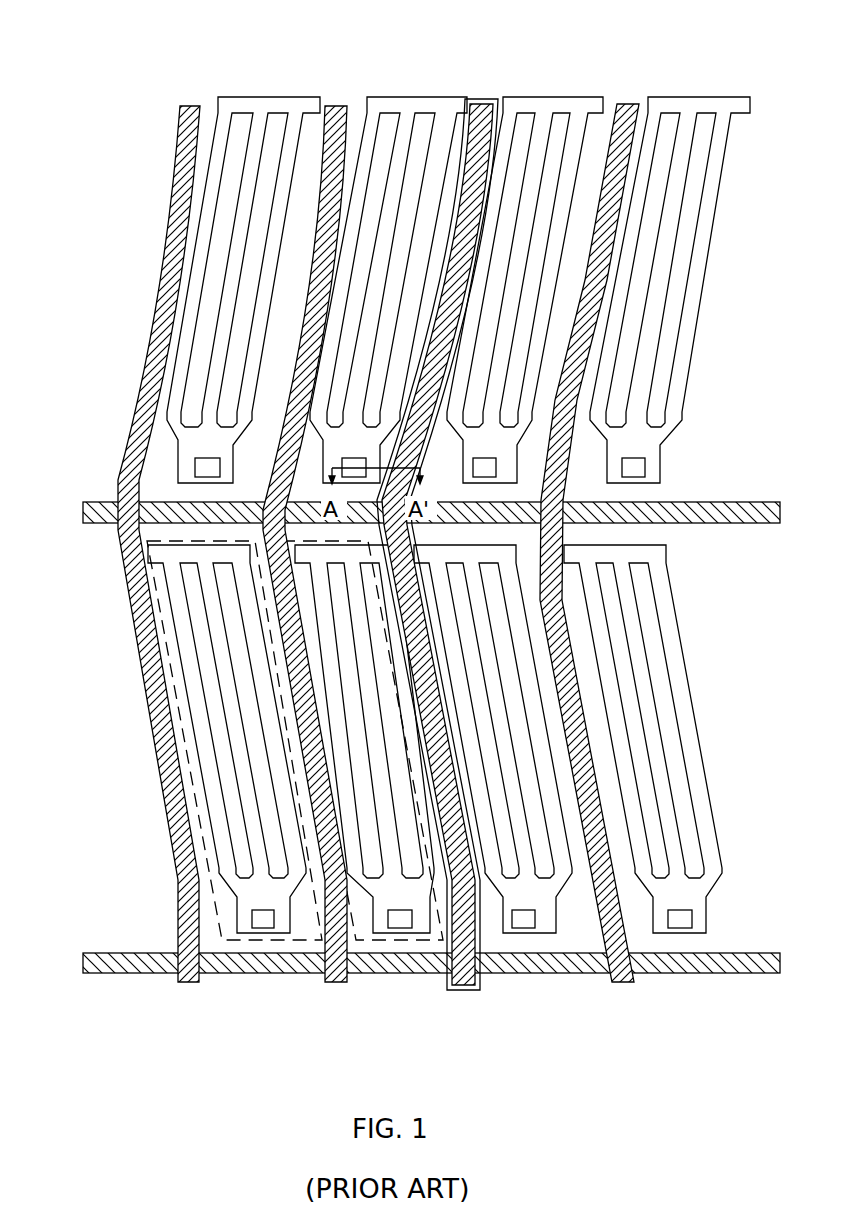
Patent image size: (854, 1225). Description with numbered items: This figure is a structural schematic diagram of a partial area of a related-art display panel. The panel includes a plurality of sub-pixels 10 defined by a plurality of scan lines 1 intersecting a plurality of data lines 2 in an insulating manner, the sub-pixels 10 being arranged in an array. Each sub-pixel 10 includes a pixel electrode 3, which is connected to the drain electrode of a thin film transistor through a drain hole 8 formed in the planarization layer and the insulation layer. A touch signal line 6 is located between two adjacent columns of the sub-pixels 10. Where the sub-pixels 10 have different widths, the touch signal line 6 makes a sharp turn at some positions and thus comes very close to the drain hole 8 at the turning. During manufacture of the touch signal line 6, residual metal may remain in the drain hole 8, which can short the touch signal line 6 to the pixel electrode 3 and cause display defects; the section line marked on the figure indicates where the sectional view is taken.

The scan line 1 is at (85, 505).
The data line 2 is at (185, 110).
The pixel electrode 3 is at (265, 110).
The touch signal line 6 is at (475, 103).
The drain hole 8 is at (193, 467).
The sub-pixel 10 is at (267, 940).